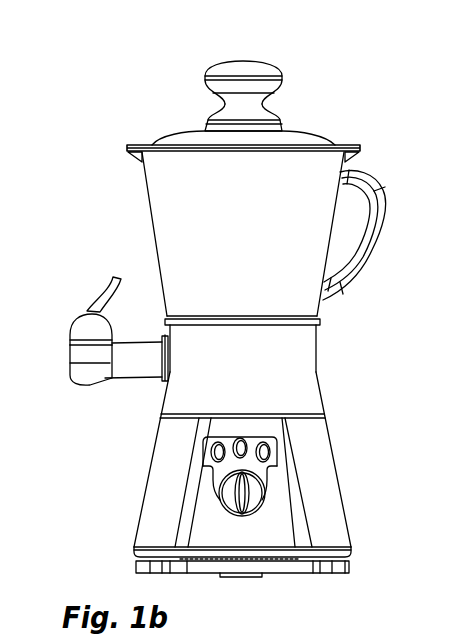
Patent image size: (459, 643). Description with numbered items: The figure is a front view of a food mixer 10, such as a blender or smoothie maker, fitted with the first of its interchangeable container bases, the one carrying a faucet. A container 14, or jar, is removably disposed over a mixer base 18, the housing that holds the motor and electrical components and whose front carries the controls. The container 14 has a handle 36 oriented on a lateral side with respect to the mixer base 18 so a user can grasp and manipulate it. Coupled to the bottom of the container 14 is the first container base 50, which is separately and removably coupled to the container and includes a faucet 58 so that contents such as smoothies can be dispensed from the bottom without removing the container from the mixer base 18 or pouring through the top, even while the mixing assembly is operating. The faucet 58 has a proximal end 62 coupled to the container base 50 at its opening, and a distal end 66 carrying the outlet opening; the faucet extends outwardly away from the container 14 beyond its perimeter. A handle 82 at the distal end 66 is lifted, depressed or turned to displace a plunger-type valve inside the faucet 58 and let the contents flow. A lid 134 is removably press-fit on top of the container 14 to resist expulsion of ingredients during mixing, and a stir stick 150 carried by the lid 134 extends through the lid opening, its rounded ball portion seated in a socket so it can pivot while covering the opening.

The food mixer 10 is at (116, 505).
The container 14 is at (144, 192).
The mixer base 18 is at (350, 534).
The handle 36 is at (385, 207).
The first container base 50 is at (313, 372).
The faucet 58 is at (82, 316).
The proximal end 62 is at (158, 384).
The distal end 66 is at (72, 383).
The handle 82 is at (112, 275).
The lid 134 is at (320, 140).
The stir stick 150 is at (233, 60).